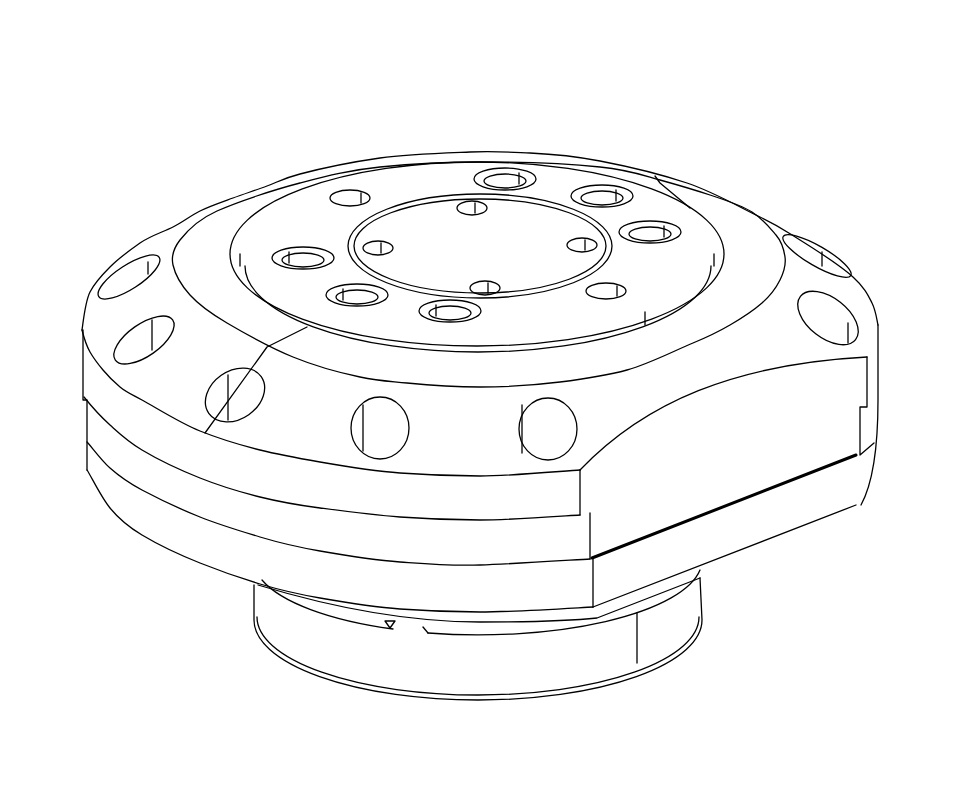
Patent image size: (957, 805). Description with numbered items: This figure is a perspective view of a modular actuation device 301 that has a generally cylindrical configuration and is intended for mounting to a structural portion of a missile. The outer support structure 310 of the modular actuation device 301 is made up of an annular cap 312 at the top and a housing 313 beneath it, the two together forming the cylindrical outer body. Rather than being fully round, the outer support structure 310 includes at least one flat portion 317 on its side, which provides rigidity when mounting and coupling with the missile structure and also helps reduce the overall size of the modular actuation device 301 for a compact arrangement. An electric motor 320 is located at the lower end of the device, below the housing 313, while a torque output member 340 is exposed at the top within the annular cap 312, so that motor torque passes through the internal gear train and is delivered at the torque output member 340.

The modular actuation device 301 is at (237, 62).
The outer support structure 310 is at (68, 272).
The annular cap 312 is at (168, 247).
The housing 313 is at (142, 515).
The flat portion 317 is at (760, 462).
The electric motor 320 is at (700, 652).
The torque output member 340 is at (421, 178).